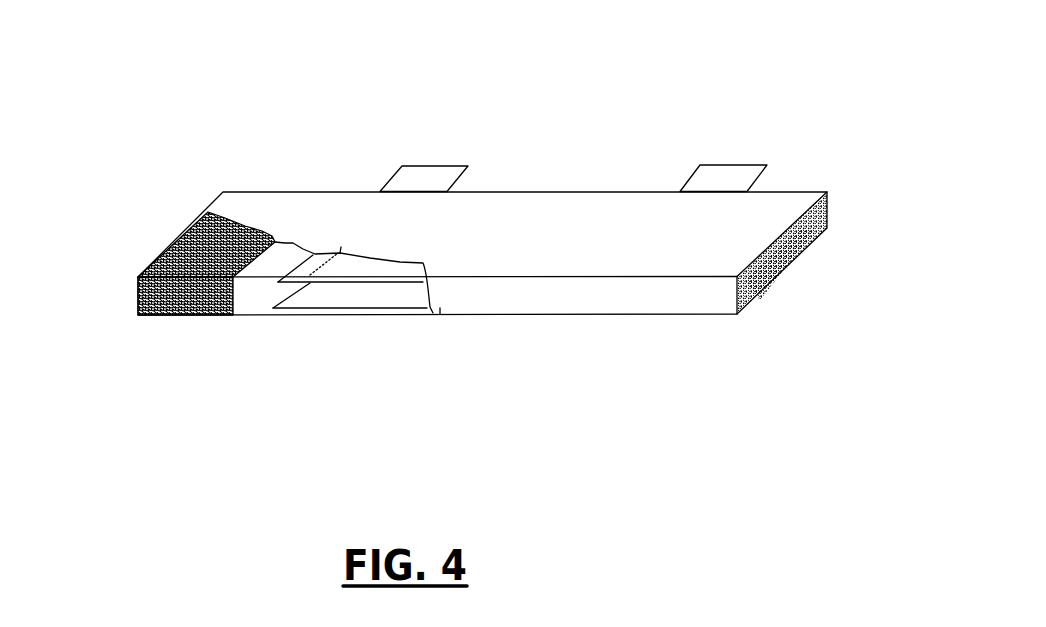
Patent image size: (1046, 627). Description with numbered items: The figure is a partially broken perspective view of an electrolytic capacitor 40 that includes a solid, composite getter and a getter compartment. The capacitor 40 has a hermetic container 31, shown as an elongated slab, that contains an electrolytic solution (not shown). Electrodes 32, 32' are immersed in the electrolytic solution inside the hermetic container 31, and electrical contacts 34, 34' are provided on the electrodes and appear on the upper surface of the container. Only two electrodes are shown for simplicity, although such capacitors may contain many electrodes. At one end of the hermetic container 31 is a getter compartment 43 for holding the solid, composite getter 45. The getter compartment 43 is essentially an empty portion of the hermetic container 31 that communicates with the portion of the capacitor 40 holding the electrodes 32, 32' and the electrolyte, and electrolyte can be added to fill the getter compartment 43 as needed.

The hermetic container 31 is at (680, 315).
The electrode 32 is at (314, 191).
The electrode 32' is at (356, 331).
The electrical contact 34 is at (446, 128).
The electrical contact 34' is at (723, 126).
The capacitor 40 is at (501, 240).
The getter compartment 43 is at (152, 262).
The solid, composite getter 45 is at (137, 315).